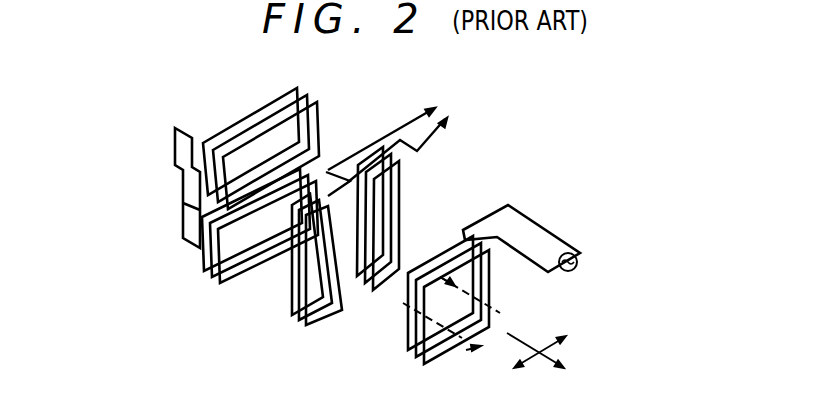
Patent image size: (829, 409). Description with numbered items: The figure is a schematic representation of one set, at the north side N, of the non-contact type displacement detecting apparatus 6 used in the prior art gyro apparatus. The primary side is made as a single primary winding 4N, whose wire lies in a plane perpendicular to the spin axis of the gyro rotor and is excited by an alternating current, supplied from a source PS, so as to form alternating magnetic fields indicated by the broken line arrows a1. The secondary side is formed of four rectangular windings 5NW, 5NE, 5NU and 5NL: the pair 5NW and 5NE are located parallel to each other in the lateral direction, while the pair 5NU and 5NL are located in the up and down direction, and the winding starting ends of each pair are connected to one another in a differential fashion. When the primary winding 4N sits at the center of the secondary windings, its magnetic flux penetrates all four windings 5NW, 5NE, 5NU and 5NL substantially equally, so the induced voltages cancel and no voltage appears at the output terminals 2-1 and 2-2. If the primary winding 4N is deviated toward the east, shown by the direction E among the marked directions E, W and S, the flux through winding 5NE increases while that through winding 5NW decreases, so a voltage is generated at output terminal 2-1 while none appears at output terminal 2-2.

The non-contact type displacement detecting apparatus 6 is at (597, 85).
The north side N is at (172, 128).
The output terminal 2-2 is at (171, 197).
The output terminal 2-1 is at (447, 118).
The secondary winding 5NU is at (308, 90).
The secondary winding 5NL is at (211, 282).
The secondary winding 5NW is at (303, 322).
The secondary winding 5NE is at (409, 258).
The primary winding 4N is at (418, 356).
The alternating magnetic field a1 is at (503, 312).
The power source plate PS is at (578, 266).
The east direction E is at (551, 343).
The west direction W is at (503, 376).
The south direction S is at (546, 360).